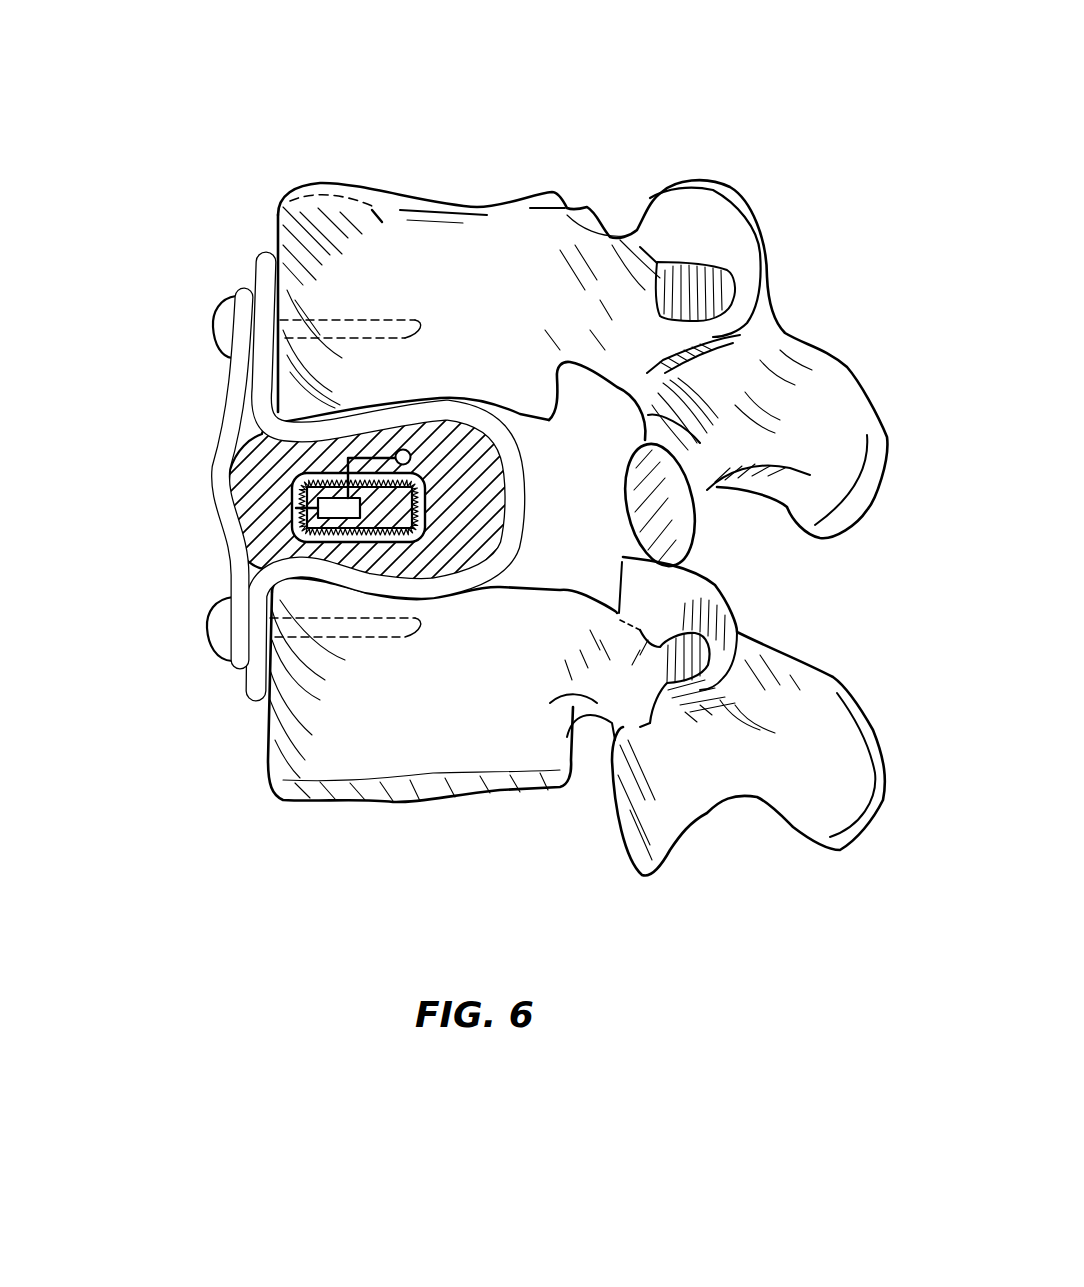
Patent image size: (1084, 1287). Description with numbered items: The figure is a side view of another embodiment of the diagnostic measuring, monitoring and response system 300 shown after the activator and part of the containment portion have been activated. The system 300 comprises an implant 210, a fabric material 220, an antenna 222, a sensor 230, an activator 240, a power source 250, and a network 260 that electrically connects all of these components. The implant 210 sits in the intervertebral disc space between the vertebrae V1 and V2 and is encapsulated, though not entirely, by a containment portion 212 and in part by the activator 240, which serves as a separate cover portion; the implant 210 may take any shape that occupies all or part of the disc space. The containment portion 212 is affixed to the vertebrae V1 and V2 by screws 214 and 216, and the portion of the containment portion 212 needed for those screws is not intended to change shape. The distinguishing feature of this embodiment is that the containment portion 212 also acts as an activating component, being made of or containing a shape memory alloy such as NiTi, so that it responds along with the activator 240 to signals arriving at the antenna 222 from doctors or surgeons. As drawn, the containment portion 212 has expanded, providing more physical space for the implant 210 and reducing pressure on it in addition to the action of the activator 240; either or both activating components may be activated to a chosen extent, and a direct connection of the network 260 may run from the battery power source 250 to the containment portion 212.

The diagnostic measuring, monitoring and response system 300 is at (348, 348).
The vertebra V1 is at (515, 290).
The vertebra V2 is at (440, 745).
The containment portion 212 is at (258, 268).
The screw 214 is at (220, 328).
The screw 216 is at (208, 625).
The activator 240 is at (227, 412).
The implant 210 is at (453, 485).
The fabric material 220 is at (427, 502).
The antenna 222 is at (425, 522).
The sensor 230 is at (340, 512).
The power source 250 is at (411, 455).
The network 260 is at (296, 508).